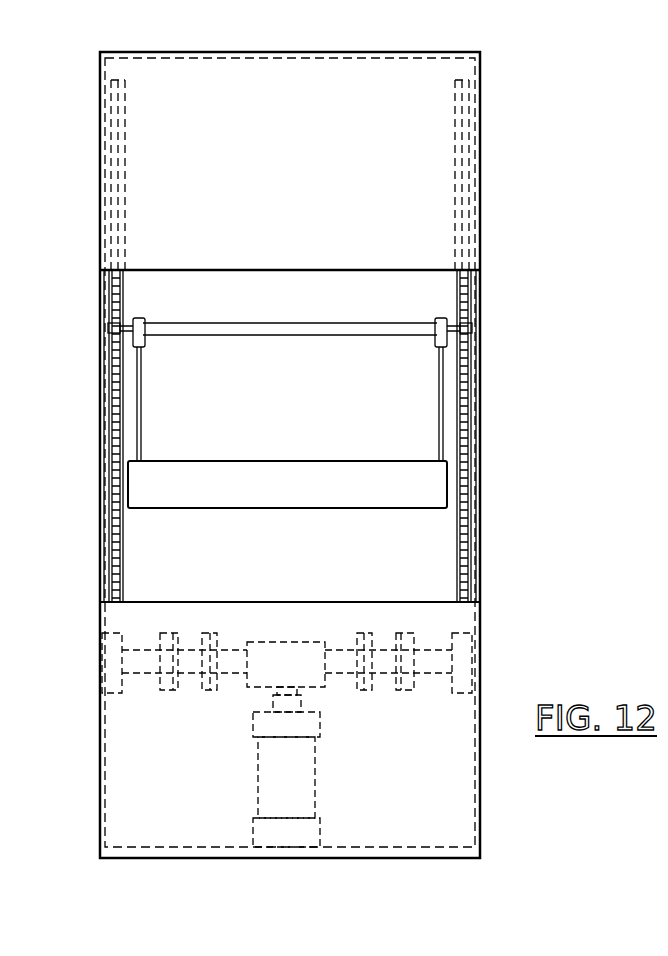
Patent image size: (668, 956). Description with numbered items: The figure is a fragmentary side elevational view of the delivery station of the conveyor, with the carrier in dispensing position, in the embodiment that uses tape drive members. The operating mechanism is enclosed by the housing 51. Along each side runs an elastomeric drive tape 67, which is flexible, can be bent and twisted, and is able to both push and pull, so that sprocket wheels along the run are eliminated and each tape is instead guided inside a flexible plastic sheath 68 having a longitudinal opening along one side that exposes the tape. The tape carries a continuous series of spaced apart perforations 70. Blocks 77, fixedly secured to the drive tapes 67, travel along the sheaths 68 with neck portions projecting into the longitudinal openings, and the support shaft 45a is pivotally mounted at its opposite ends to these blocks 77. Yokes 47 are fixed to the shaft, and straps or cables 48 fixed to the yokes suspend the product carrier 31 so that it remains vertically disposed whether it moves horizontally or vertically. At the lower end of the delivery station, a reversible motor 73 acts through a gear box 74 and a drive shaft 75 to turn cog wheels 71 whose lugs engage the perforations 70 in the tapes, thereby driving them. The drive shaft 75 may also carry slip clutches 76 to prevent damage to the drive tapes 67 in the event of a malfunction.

The product carrier 31 is at (243, 497).
The support shaft 45a is at (262, 325).
The yoke 47 is at (140, 318).
The strap or cable 48 is at (141, 410).
The housing 51 is at (440, 178).
The elastomeric drive tape 67 is at (112, 498).
The flexible plastic sheath 68 is at (125, 133).
The perforation 70 is at (116, 540).
The cog wheel 71 is at (125, 690).
The reversible motor 73 is at (305, 782).
The gear box 74 is at (288, 656).
The drive shaft 75 is at (147, 628).
The slip clutch 76 is at (175, 692).
The block 77 is at (110, 325).